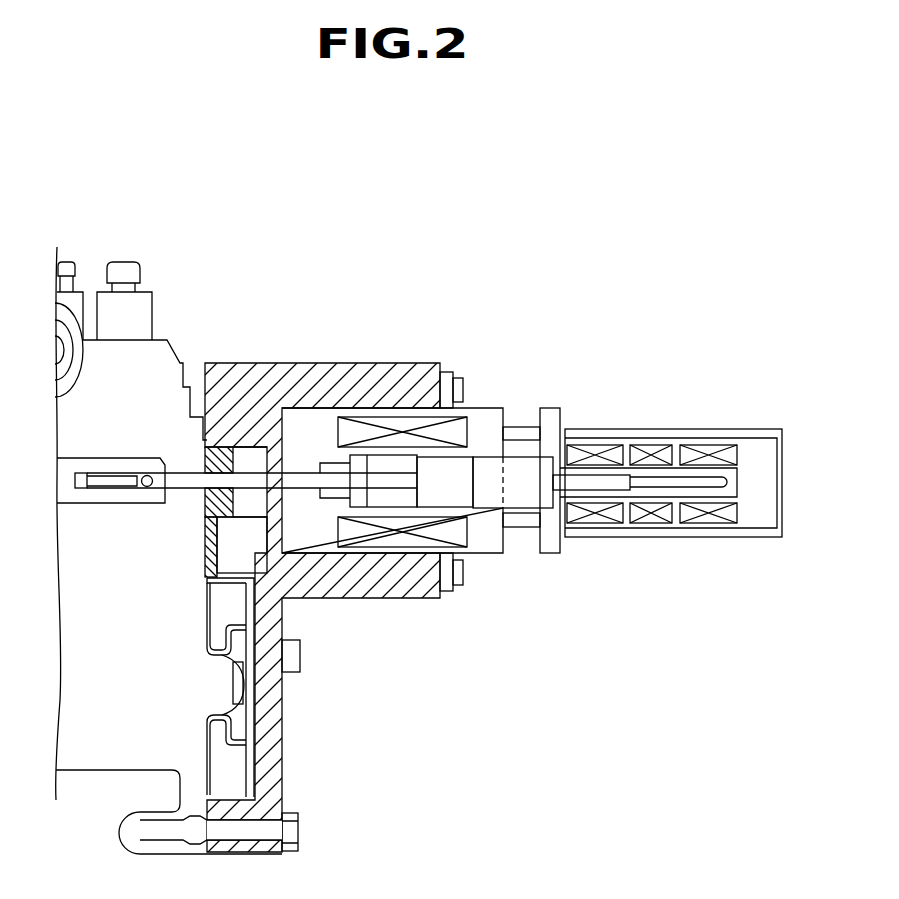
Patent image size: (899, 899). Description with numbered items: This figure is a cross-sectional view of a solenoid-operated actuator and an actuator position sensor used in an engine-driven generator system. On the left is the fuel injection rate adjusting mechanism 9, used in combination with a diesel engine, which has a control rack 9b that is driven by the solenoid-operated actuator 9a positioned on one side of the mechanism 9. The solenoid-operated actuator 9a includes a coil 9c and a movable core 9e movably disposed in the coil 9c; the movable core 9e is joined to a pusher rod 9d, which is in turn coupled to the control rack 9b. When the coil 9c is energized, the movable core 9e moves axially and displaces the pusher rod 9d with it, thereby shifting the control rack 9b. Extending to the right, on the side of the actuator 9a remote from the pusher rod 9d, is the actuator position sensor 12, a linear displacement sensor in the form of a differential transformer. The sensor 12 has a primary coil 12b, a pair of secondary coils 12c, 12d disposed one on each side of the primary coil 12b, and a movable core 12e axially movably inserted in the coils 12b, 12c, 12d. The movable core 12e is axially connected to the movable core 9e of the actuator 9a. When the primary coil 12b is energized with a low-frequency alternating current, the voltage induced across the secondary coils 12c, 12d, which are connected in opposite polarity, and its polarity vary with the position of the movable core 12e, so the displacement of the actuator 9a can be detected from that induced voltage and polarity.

The fuel injection rate adjusting mechanism 9 is at (172, 318).
The solenoid-operated actuator 9a is at (489, 406).
The control rack 9b is at (84, 498).
The coil 9c is at (463, 432).
The pusher rod 9d is at (300, 483).
The movable core 9e is at (530, 488).
The actuator position sensor 12 is at (721, 425).
The primary coil 12b is at (658, 518).
The secondary coil 12c is at (597, 521).
The secondary coil 12d is at (727, 518).
The movable core 12e is at (677, 478).